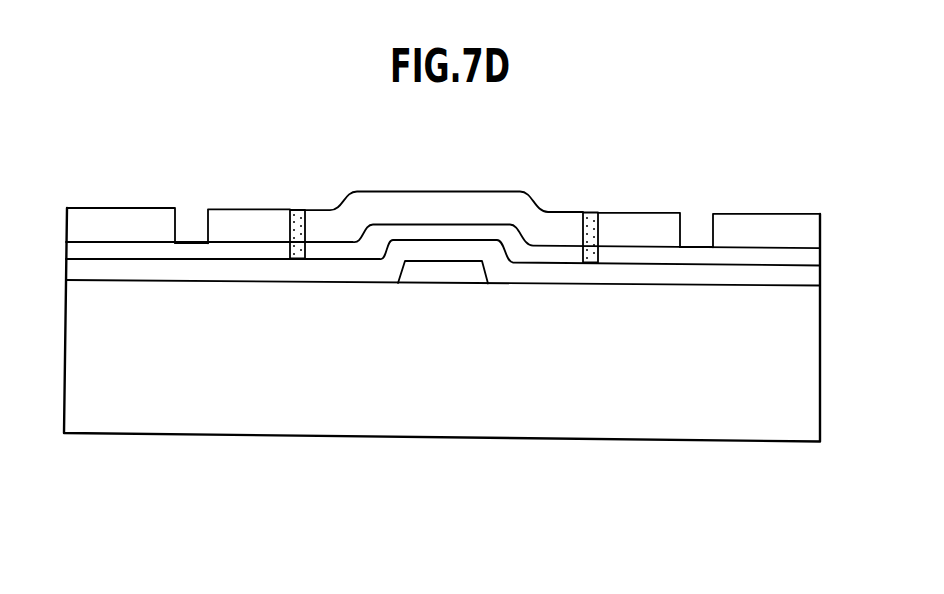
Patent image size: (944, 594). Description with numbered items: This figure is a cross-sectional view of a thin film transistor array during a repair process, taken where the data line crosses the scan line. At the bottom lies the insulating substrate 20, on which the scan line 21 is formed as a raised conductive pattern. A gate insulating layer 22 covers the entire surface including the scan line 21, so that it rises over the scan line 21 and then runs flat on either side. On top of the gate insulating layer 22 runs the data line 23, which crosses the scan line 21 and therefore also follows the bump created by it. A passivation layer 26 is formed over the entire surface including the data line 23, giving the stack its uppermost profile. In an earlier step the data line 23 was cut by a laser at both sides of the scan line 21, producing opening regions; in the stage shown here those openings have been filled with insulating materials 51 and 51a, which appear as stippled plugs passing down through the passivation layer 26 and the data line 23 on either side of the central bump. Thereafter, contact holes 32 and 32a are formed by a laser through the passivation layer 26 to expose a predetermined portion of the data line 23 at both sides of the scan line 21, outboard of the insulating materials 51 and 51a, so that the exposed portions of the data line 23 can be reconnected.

The insulating substrate 20 is at (812, 366).
The scan line 21 is at (442, 272).
The gate insulating layer 22 is at (815, 277).
The data line 23 is at (815, 255).
The passivation layer 26 is at (815, 233).
The contact hole 32 is at (192, 222).
The contact hole 32a is at (697, 227).
The insulating material 51 is at (297, 227).
The insulating material 51a is at (593, 222).